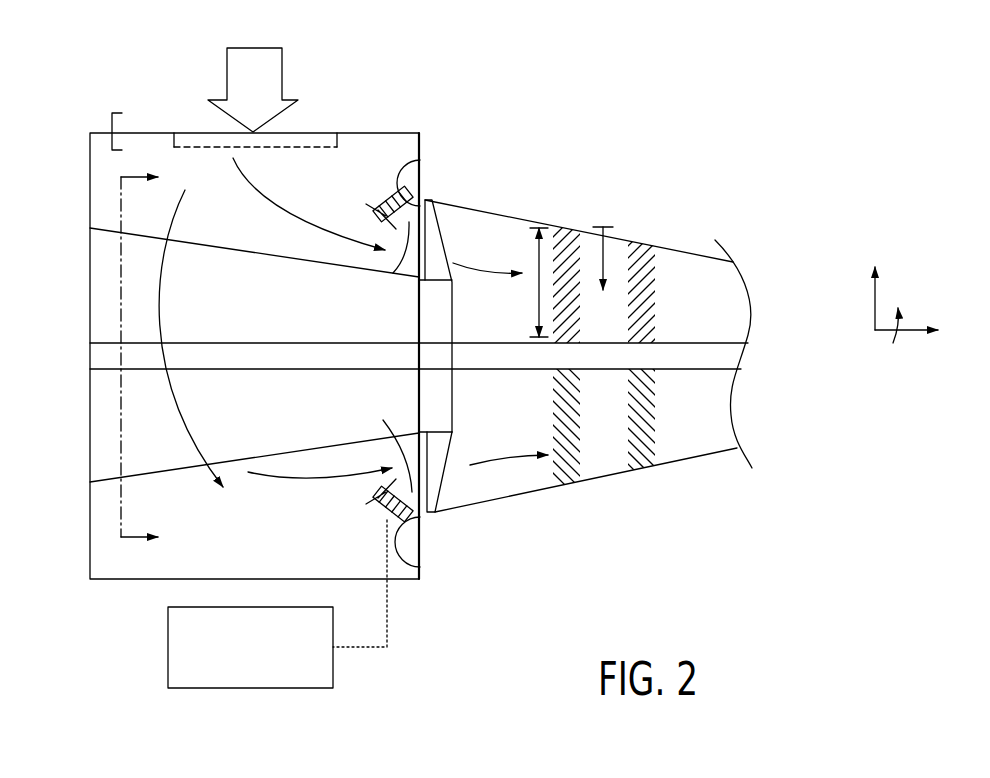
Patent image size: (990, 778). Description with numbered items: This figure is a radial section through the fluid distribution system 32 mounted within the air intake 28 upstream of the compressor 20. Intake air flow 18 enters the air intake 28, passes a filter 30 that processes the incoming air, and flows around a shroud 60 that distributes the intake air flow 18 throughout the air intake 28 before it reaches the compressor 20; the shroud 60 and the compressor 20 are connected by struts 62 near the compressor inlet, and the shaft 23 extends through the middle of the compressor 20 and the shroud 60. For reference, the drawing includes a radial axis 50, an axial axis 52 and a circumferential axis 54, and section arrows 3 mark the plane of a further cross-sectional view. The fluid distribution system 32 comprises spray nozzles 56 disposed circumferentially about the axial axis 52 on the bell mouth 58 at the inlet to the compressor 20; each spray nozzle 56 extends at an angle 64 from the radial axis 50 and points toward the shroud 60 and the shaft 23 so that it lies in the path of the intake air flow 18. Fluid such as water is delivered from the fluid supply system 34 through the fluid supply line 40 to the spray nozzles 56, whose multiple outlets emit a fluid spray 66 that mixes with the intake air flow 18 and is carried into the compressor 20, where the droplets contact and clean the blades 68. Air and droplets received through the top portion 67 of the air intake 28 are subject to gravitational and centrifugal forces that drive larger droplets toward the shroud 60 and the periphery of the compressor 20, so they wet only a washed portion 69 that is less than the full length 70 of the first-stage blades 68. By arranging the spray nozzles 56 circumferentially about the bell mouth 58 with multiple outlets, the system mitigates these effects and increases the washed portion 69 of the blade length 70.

The intake air flow 18 is at (293, 93).
The compressor 20 is at (490, 211).
The shaft 23 is at (735, 354).
The air intake 28 is at (90, 167).
The filter 30 is at (203, 140).
The fluid distribution system 32 is at (433, 615).
The fluid supply system 34 is at (250, 690).
The fluid supply line 40 is at (358, 648).
The radial axis 50 is at (878, 296).
The axial axis 52 is at (443, 446).
The circumferential axis 54 is at (895, 344).
The spray nozzle 56 is at (388, 197).
The bell mouth 58 is at (412, 178).
The shroud 60 is at (146, 478).
The strut 62 is at (446, 236).
The angle 64 is at (393, 273).
The fluid spray 66 is at (373, 212).
The top portion of the air intake 67 is at (112, 123).
The compressor blades 68 is at (662, 280).
The washed portion 69 is at (632, 253).
The length of the compressor blades 70 is at (538, 299).
The section line 3- 3 is at (148, 356).